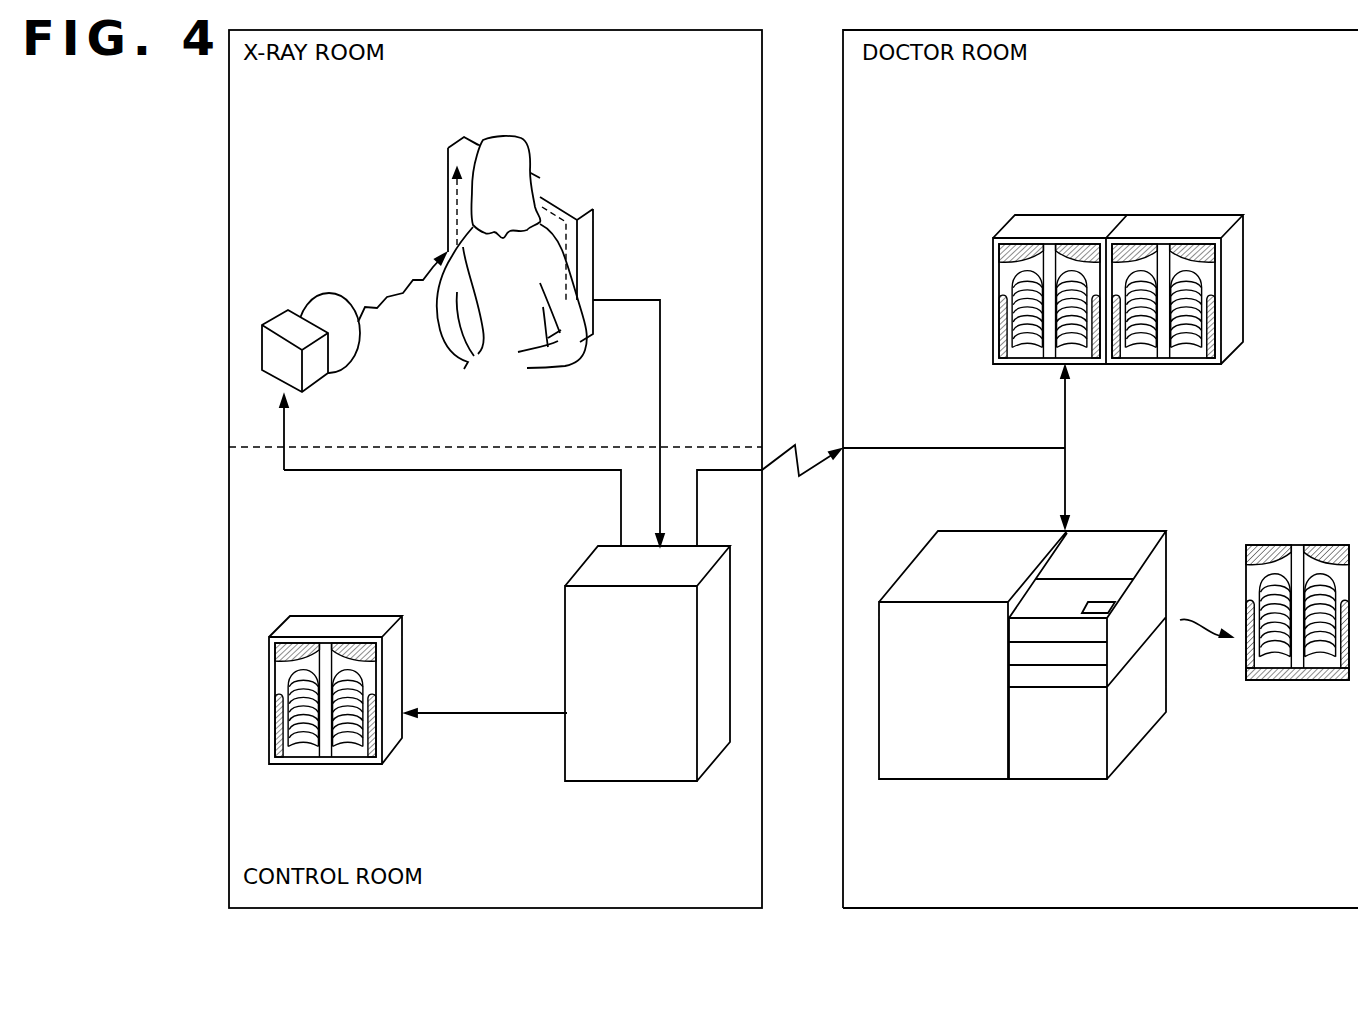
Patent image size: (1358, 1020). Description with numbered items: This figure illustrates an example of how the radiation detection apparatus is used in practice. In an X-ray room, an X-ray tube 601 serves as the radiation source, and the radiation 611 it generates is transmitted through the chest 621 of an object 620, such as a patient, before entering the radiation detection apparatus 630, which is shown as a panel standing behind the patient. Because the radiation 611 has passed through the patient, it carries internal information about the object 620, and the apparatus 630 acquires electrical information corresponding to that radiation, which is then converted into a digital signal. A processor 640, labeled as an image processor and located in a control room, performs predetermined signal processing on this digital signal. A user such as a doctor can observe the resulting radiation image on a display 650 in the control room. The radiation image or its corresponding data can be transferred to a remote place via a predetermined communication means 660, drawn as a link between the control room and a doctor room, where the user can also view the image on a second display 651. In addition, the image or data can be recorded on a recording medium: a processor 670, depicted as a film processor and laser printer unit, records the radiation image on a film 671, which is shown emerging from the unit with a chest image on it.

The X-ray tube 601 is at (273, 312).
The radiation 611 is at (395, 290).
The object 620 is at (506, 135).
The chest 621 is at (508, 320).
The radiation detection apparatus 630 is at (556, 217).
The processor 640 is at (564, 745).
The display 650 is at (404, 658).
The display 651 is at (1030, 219).
The communication means 660 is at (798, 466).
The processor 670 is at (984, 530).
The film 671 is at (1297, 545).